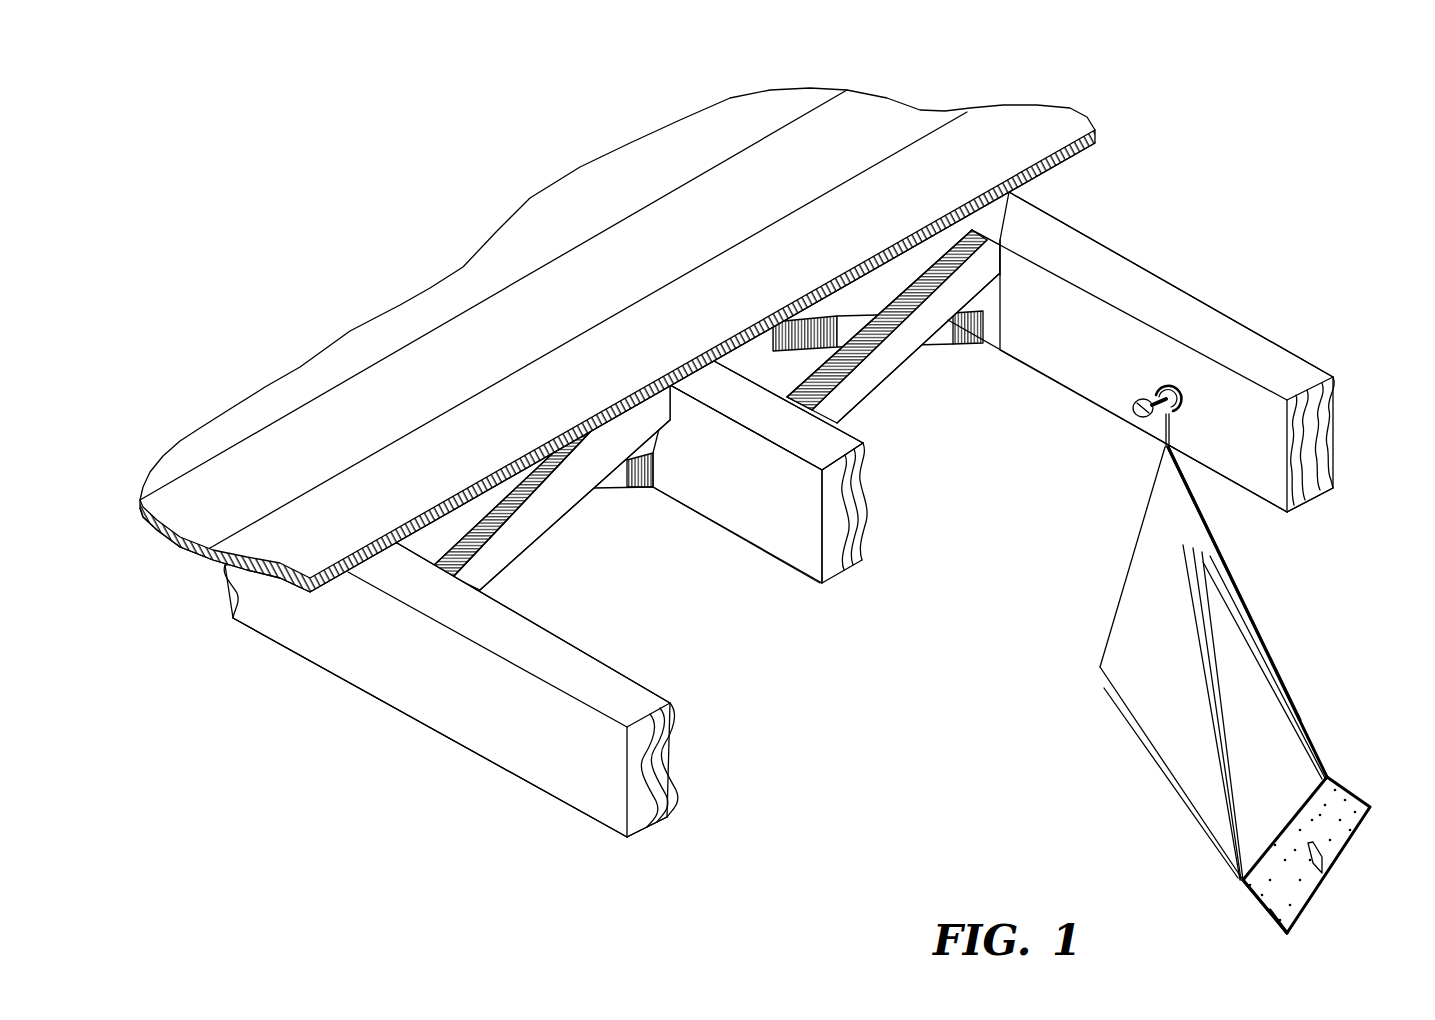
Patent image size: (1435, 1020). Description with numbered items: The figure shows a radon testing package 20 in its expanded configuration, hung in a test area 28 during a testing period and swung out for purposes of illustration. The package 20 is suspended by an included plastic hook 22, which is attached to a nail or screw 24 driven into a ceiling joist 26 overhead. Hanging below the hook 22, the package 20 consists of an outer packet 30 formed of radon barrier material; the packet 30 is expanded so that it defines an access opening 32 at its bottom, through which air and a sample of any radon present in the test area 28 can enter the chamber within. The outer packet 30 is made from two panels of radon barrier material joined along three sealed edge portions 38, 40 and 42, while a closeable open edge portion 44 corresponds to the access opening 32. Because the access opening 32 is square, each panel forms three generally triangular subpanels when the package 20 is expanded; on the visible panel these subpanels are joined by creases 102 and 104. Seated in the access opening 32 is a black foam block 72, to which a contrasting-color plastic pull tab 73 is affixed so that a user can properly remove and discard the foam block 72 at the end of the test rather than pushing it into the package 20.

The radon testing package 20 is at (1228, 694).
The plastic hook 22 is at (1182, 410).
The nail or screw 24 is at (1133, 417).
The ceiling joist 26 is at (1148, 283).
The test area 28 is at (873, 703).
The outer packet 30 is at (1342, 748).
The access opening 32 is at (1320, 921).
The sealed edge portion 38 is at (1277, 933).
The sealed edge portion 40 is at (1297, 700).
The sealed edge portion 42 is at (1117, 607).
The closeable open edge portion 44 is at (1353, 837).
The foam block 72 is at (1263, 906).
The pull tab 73 is at (1317, 880).
The crease 102 is at (1141, 748).
The crease 104 is at (1207, 687).